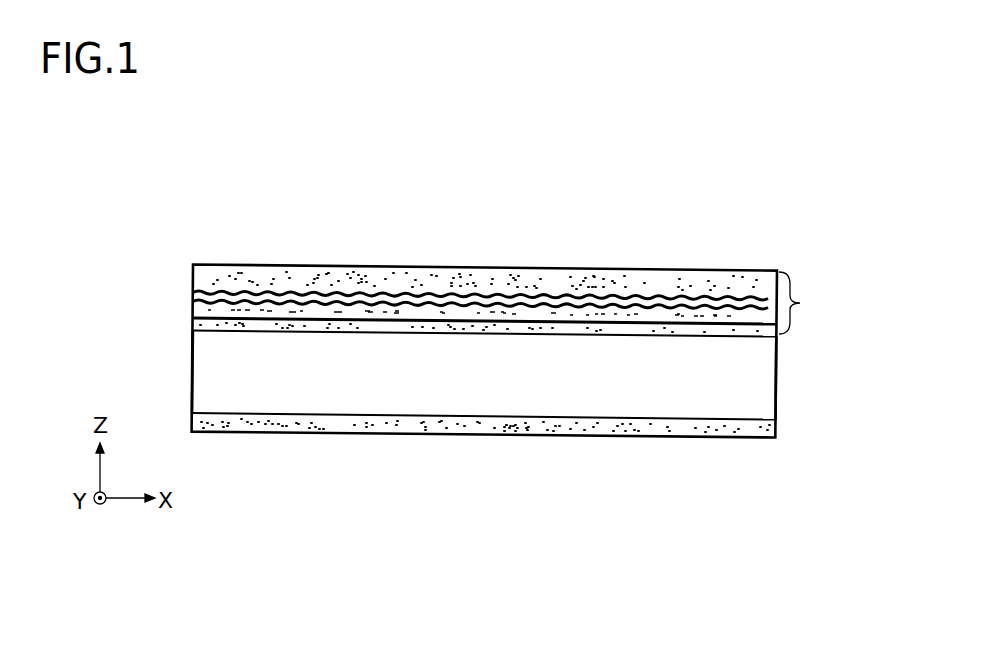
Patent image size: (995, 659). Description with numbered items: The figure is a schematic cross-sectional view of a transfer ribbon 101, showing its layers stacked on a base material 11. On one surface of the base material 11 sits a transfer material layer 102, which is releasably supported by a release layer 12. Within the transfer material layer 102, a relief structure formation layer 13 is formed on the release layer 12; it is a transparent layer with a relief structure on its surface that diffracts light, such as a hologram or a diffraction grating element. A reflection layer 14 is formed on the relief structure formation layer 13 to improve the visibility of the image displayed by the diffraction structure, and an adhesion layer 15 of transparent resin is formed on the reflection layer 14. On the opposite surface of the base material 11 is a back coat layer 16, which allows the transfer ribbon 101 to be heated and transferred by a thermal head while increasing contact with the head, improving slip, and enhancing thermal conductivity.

The transfer ribbon 101 is at (577, 240).
The transfer material layer 102 is at (821, 303).
The adhesion layer 15 is at (758, 271).
The reflection layer 14 is at (290, 289).
The relief structure formation layer 13 is at (193, 307).
The release layer 12 is at (777, 335).
The base material 11 is at (777, 394).
The back coat layer 16 is at (777, 431).